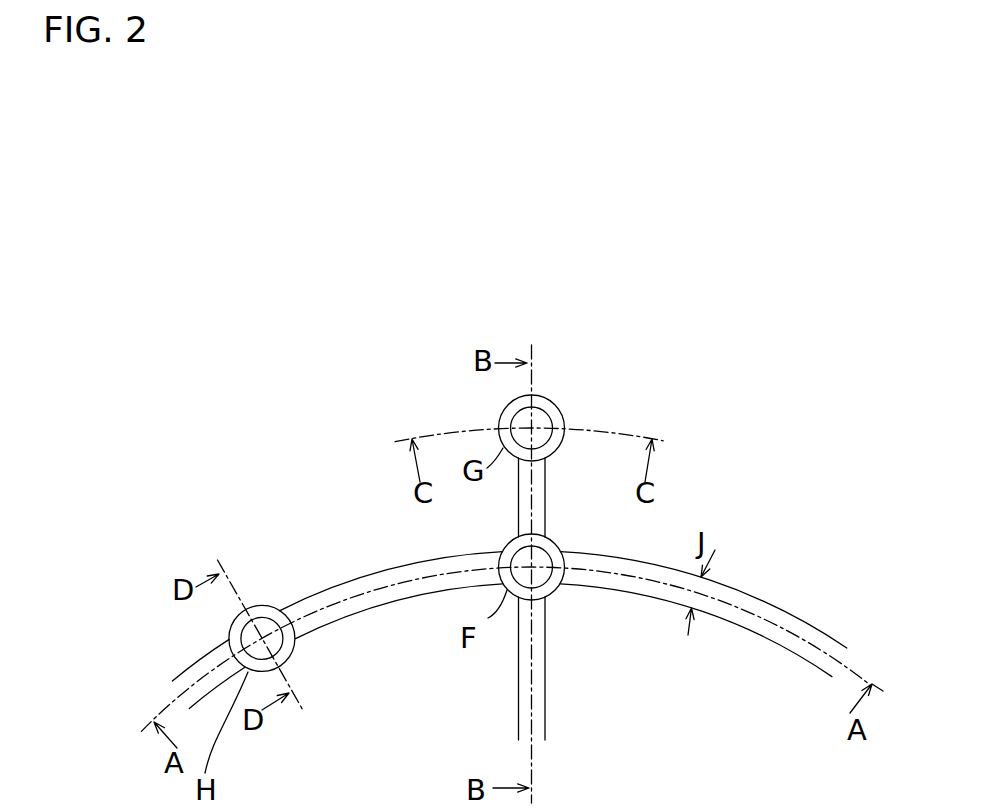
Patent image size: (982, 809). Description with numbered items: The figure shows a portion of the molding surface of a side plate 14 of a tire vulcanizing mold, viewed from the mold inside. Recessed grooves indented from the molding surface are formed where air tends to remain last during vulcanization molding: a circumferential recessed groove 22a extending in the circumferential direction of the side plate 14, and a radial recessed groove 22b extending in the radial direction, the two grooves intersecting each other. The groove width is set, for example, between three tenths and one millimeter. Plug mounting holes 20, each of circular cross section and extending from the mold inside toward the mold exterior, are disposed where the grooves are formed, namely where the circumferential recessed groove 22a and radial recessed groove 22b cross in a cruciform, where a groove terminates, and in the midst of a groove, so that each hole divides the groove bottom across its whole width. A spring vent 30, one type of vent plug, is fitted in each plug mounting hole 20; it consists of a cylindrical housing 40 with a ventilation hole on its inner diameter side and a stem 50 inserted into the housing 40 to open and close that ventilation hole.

The side plate 14 is at (787, 380).
The plug mounting hole 20 is at (512, 414).
The circumferential recessed groove 22a is at (770, 610).
The radial recessed groove 22b is at (545, 718).
The spring vent 30 is at (660, 374).
The housing 40 is at (552, 409).
The stem 50 is at (542, 420).